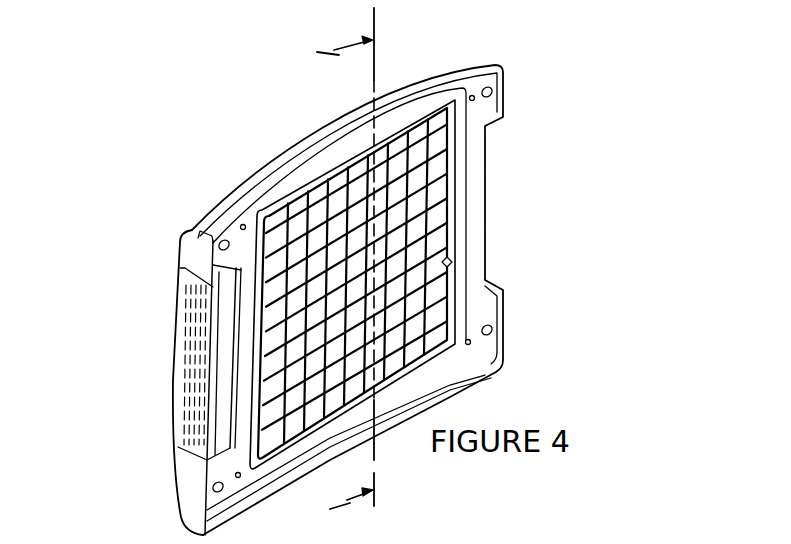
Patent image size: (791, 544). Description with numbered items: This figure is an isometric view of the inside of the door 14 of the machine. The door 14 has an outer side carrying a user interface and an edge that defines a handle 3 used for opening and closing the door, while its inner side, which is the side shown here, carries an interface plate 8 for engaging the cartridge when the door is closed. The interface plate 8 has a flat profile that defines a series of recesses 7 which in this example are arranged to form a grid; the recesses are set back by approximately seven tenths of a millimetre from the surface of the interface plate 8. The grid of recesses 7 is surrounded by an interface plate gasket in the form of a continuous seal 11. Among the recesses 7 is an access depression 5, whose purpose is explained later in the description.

The door 14 is at (278, 168).
The handle 3 is at (194, 345).
The recesses 7 is at (433, 178).
The interface plate 8 is at (433, 232).
The access depression 5 is at (450, 262).
The continuous seal 11 is at (397, 137).